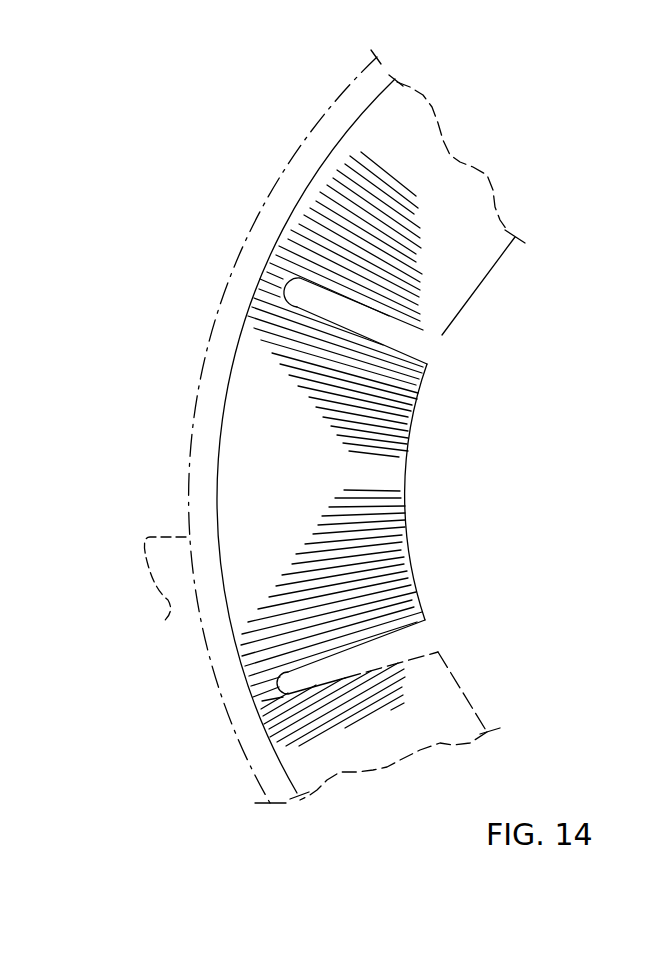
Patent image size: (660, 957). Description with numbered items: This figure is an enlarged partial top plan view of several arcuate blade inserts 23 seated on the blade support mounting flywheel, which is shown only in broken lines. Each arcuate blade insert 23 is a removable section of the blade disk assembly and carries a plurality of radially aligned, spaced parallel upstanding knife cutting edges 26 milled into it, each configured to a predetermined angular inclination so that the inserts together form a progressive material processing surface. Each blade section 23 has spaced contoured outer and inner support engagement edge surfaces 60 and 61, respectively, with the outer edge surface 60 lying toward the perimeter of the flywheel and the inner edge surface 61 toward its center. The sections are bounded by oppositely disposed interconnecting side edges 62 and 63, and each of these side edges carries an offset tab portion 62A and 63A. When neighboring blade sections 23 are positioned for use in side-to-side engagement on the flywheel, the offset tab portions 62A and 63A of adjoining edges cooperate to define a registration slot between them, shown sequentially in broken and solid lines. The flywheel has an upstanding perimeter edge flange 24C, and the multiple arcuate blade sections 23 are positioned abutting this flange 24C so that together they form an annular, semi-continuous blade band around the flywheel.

The arcuate blade insert 23 is at (377, 517).
The upstanding perimeter edge flange 24C is at (172, 619).
The knife cutting edge 26 is at (402, 426).
The outer support engagement edge surface 60 is at (217, 447).
The inner support engagement edge surface 61 is at (415, 561).
The side edge 62 is at (391, 316).
The offset tab portion 62A is at (257, 676).
The side edge 63 is at (403, 353).
The offset tab portion 63A is at (268, 288).